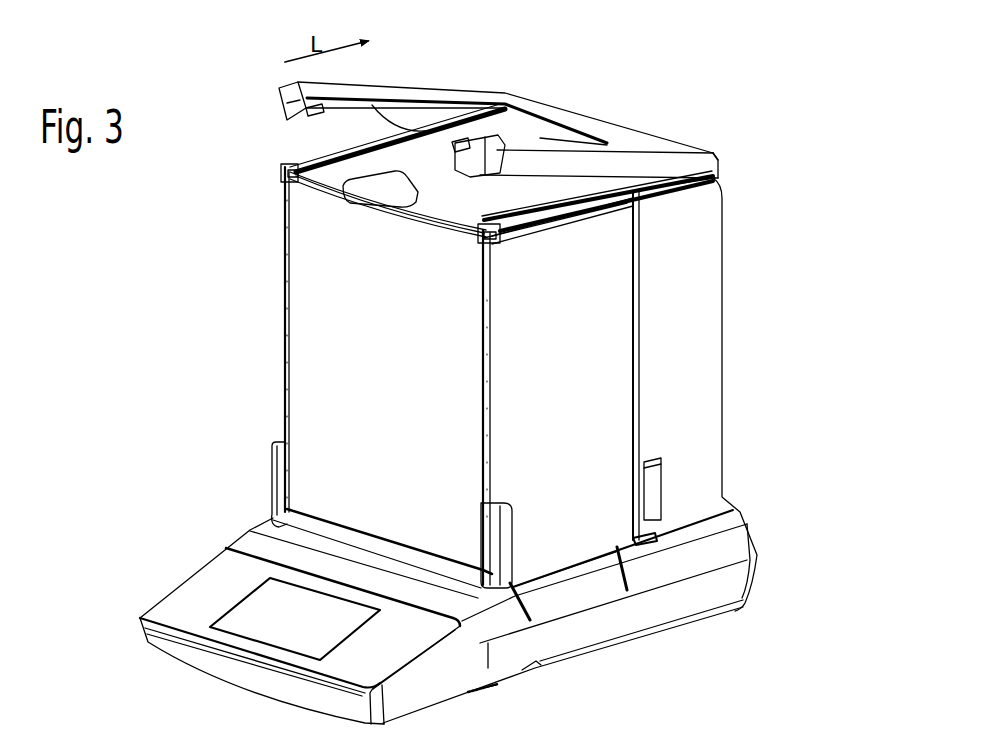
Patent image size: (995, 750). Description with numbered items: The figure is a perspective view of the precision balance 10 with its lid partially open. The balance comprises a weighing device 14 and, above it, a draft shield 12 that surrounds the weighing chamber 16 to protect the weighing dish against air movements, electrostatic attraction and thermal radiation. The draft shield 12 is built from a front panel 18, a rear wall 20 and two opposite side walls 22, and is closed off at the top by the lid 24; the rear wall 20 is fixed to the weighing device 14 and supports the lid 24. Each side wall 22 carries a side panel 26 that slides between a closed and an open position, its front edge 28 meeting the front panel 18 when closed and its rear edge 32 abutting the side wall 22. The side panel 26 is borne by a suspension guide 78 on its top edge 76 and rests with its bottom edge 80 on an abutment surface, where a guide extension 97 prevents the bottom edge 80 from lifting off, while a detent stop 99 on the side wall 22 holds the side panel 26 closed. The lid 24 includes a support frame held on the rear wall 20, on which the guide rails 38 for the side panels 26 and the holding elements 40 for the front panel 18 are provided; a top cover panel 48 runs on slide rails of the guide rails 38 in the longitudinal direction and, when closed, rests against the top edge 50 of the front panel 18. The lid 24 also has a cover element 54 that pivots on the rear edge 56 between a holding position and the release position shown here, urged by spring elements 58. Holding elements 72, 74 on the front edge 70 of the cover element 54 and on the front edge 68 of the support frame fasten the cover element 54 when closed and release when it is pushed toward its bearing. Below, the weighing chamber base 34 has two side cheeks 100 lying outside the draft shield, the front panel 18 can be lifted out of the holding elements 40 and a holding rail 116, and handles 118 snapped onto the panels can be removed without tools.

The precision balance 10 is at (760, 140).
The draft shield 12 is at (258, 368).
The weighing device 14 is at (730, 583).
The weighing chamber 16 is at (330, 387).
The front panel 18 is at (310, 320).
The rear wall 20 is at (727, 453).
The side wall 22 is at (702, 368).
The lid 24 is at (623, 137).
The side panel 26 is at (592, 317).
The front edge 28 is at (290, 433).
The rear edge 32 is at (645, 407).
The weighing chamber base 34 is at (568, 565).
The guide rail 38 is at (304, 168).
The holding element 40 is at (297, 177).
The top cover panel 48 is at (425, 203).
The top edge 50 is at (433, 227).
The cover element 54 is at (658, 140).
The rear edge 56 is at (705, 153).
The spring element 58 is at (403, 125).
The front edge 68 is at (487, 250).
The front edge 70 is at (462, 140).
The holding element 72 is at (307, 105).
The holding element 74 is at (295, 162).
The top edge 76 is at (597, 215).
The suspension guide 78 is at (450, 200).
The bottom edge 80 is at (600, 543).
The guide extension 97 is at (657, 537).
The detent stop 99 is at (647, 482).
The side cheek 100 is at (542, 610).
The holding rail 116 is at (396, 560).
The handle 118 is at (373, 200).